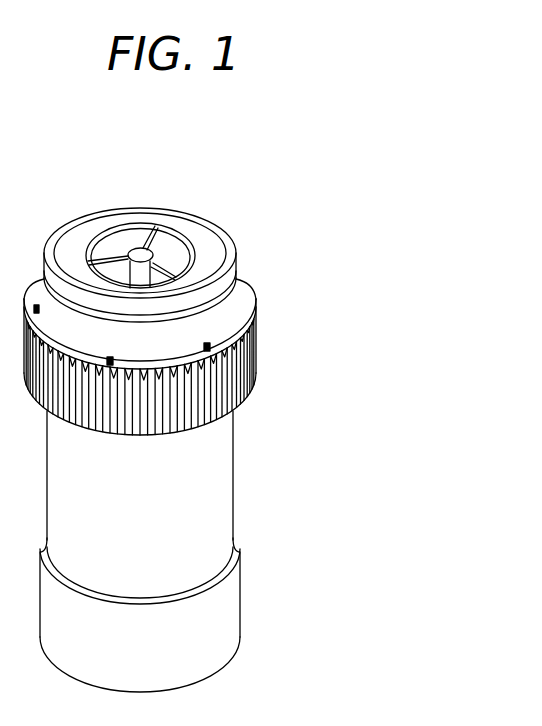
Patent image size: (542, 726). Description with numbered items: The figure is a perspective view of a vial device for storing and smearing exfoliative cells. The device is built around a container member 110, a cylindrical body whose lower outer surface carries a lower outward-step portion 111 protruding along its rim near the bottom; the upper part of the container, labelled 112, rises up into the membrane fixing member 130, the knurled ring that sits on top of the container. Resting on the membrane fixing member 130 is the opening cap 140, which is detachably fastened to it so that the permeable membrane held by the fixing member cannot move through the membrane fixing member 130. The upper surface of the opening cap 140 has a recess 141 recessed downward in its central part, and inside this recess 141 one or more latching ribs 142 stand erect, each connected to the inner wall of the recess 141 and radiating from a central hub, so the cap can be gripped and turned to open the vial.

The container member 110 is at (234, 478).
The lower outward-step portion 111 is at (234, 605).
The upper portion of body 112 is at (217, 427).
The membrane fixing member 130 is at (258, 343).
The opening cap 140 is at (225, 252).
The recess 141 is at (176, 268).
The latching ribs 142 is at (101, 256).